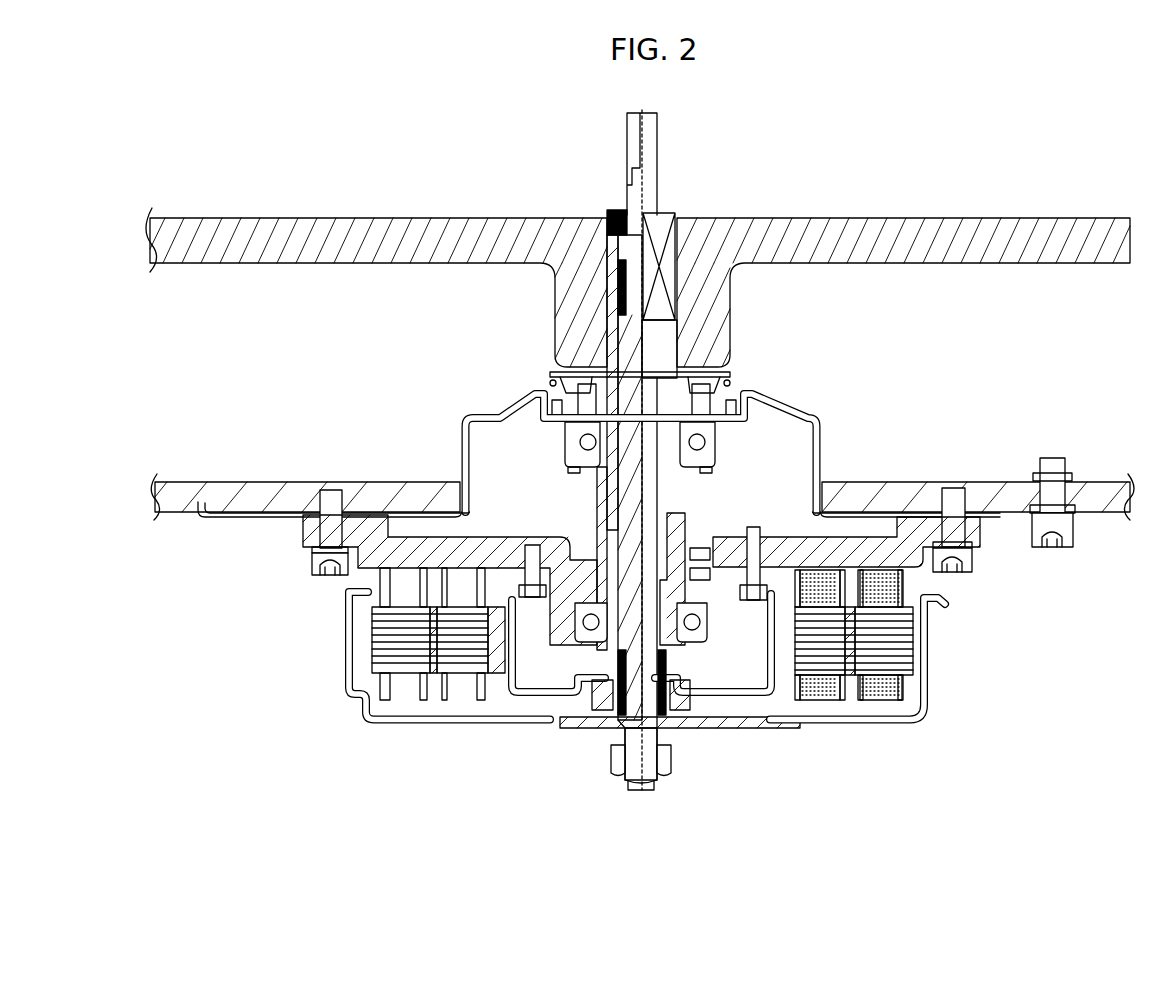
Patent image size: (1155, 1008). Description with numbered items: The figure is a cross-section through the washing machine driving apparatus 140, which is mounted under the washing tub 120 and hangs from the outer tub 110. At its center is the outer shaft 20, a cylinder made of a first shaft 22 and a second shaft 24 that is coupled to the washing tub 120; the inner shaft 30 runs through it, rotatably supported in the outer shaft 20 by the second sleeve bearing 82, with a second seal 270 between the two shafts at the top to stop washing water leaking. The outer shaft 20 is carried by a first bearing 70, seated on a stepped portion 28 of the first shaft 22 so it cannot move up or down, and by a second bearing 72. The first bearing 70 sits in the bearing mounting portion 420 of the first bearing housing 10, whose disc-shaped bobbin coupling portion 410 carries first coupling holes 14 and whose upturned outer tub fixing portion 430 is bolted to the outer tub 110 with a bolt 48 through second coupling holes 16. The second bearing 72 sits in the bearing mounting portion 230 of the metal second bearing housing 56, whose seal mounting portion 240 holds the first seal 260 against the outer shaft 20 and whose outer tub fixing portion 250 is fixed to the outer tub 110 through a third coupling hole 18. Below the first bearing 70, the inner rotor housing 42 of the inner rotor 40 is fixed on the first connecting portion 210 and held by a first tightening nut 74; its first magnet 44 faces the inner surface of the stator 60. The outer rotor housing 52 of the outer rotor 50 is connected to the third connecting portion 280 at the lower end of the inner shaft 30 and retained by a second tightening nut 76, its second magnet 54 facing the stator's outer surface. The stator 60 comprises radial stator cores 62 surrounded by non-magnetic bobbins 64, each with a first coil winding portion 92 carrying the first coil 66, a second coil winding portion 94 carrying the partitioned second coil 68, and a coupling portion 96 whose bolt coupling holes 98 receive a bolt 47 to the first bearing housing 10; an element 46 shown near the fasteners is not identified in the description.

The first bearing housing 10 is at (790, 528).
The first coupling holes 14 is at (746, 552).
The second coupling holes 16 is at (318, 535).
The third coupling hole 18 is at (320, 512).
The outer shaft 20 is at (546, 484).
The first shaft 22 is at (597, 513).
The second shaft 24 is at (607, 483).
The stepped portion 28 is at (580, 648).
The inner shaft 30 is at (632, 347).
The inner rotor 40 is at (530, 786).
The inner rotor housing 42 is at (533, 700).
The first magnet 44 is at (500, 688).
The nut 46 is at (310, 565).
The bolt 47 is at (744, 556).
The bolt 48 is at (975, 560).
The outer rotor 50 is at (408, 689).
The outer rotor housing 52 is at (365, 665).
The second magnet 54 is at (368, 633).
The second bearing housing 56 is at (826, 417).
The stator 60 is at (865, 671).
The stator cores 62 is at (818, 665).
The bobbins 64 is at (928, 705).
The first coil 66 is at (842, 700).
The second coil 68 is at (900, 700).
The first bearing 70 is at (710, 640).
The second bearing 72 is at (718, 462).
The first tightening nut 74 is at (592, 712).
The second tightening nut 76 is at (648, 782).
The second sleeve bearing 82 is at (620, 720).
The first coil winding portion 92 is at (805, 700).
The second coil winding portion 94 is at (862, 698).
The coupling portion 96 is at (800, 562).
The bolt coupling holes 98 is at (742, 579).
The outer tub 110 is at (908, 484).
The washing tub 120 is at (858, 264).
The washing machine driving apparatus 140 is at (942, 372).
The first connecting portion 210 is at (604, 668).
The bearing mounting portion 230 is at (720, 450).
The seal mounting portion 240 is at (736, 422).
The outer tub fixing portion 250 is at (862, 512).
The first seal 260 is at (735, 375).
The second seal 270 is at (606, 215).
The third connecting portion 280 is at (405, 520).
The bobbin coupling portion 410 is at (780, 545).
The bearing mounting portion 420 is at (740, 640).
The outer tub fixing portion 430 is at (912, 562).